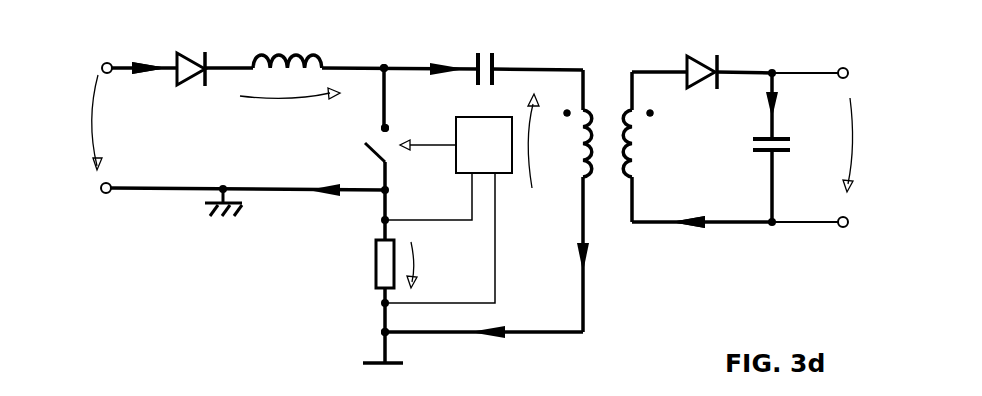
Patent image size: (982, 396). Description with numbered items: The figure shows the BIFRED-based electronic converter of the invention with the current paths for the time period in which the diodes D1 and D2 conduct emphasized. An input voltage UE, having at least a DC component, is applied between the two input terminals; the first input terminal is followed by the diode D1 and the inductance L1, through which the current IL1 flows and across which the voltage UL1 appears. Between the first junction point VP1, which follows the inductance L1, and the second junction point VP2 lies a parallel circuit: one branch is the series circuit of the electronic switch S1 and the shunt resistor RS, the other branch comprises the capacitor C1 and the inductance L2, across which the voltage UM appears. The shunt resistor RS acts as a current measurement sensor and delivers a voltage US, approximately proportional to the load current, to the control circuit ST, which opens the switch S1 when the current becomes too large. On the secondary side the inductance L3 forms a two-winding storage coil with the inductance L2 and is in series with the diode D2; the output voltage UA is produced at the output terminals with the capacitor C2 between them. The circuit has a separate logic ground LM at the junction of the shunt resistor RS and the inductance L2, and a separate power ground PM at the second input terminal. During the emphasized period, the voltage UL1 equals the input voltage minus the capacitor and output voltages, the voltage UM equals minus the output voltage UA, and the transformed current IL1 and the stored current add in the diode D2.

The diode D1 is at (187, 50).
The inductance L1 is at (287, 41).
The first junction point VP1 is at (381, 50).
The capacitor C1 is at (488, 50).
The electronic switch S1 is at (361, 140).
The control circuit ST is at (448, 210).
The inductance L2 is at (567, 144).
The inductance L3 is at (651, 144).
The diode D2 is at (704, 53).
The capacitor C2 is at (792, 147).
The power ground PM is at (246, 210).
The shunt resistor RS is at (363, 264).
The second junction point VP2 is at (356, 335).
The logic ground LM is at (405, 367).
The input voltage UE is at (76, 122).
The current through inductance L1 IL1 is at (419, 163).
The voltage across inductance L1 UL1 is at (290, 116).
The voltage across inductance L2 UM is at (541, 163).
The voltage across shunt resistor US is at (434, 265).
The output voltage UA is at (873, 145).